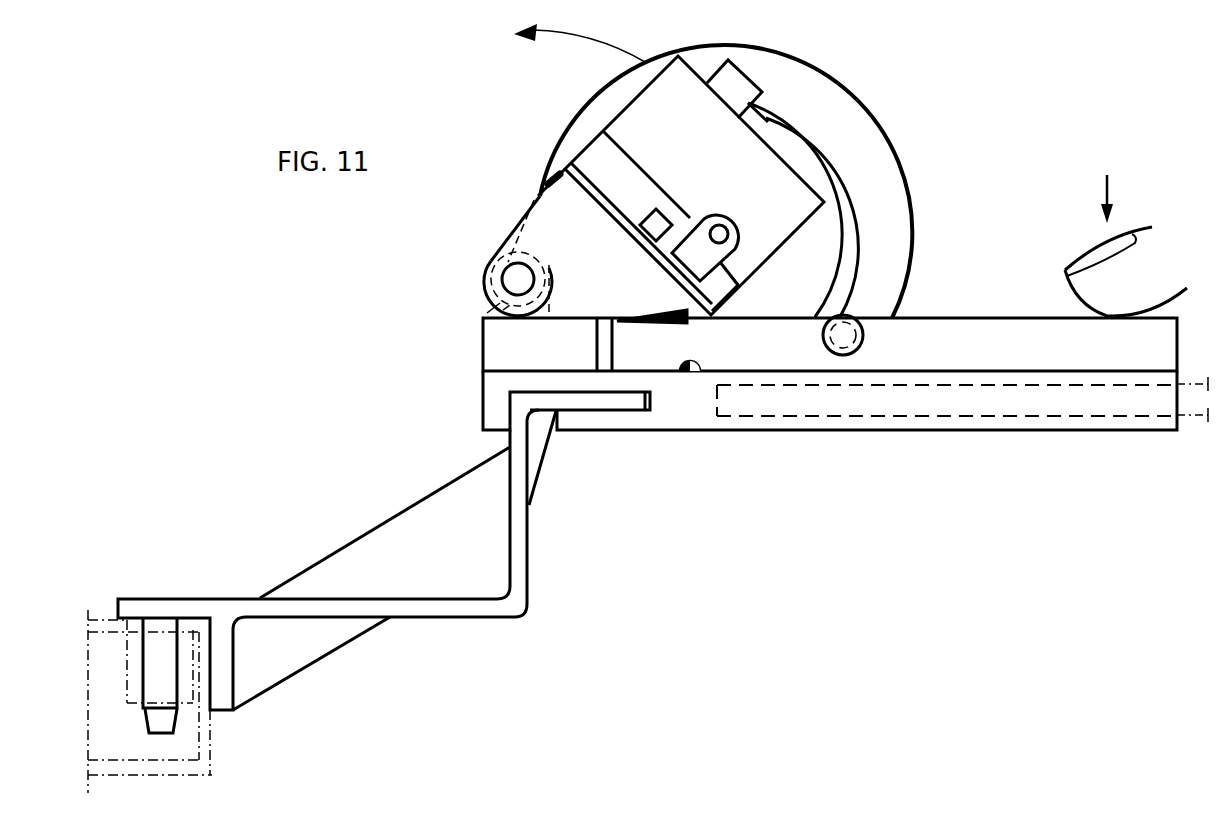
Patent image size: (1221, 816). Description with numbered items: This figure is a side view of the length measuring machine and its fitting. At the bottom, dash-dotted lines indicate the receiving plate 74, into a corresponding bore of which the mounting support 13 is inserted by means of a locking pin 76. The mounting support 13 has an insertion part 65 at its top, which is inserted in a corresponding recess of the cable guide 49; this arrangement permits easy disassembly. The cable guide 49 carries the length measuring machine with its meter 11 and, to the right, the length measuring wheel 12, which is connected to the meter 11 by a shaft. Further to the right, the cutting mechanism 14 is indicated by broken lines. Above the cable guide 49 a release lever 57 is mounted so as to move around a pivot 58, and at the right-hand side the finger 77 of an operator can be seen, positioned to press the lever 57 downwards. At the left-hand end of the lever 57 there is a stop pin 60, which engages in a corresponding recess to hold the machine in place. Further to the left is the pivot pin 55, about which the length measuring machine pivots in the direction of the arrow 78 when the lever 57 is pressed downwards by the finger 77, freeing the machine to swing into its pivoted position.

The meter 11 is at (676, 98).
The length measuring wheel 12 is at (843, 110).
The mounting support 13 is at (495, 555).
The cutting mechanism 14 is at (1196, 415).
The cable guide 49 is at (941, 405).
The pivot pin 55 is at (513, 277).
The release lever 57 is at (952, 326).
The pivot 58 is at (851, 329).
The stop pin 60 is at (690, 372).
The insertion part 65 is at (587, 400).
The receiving plate 74 is at (190, 750).
The locking pin 76 is at (163, 633).
The finger 77 is at (1087, 289).
The arrow 78 is at (595, 37).